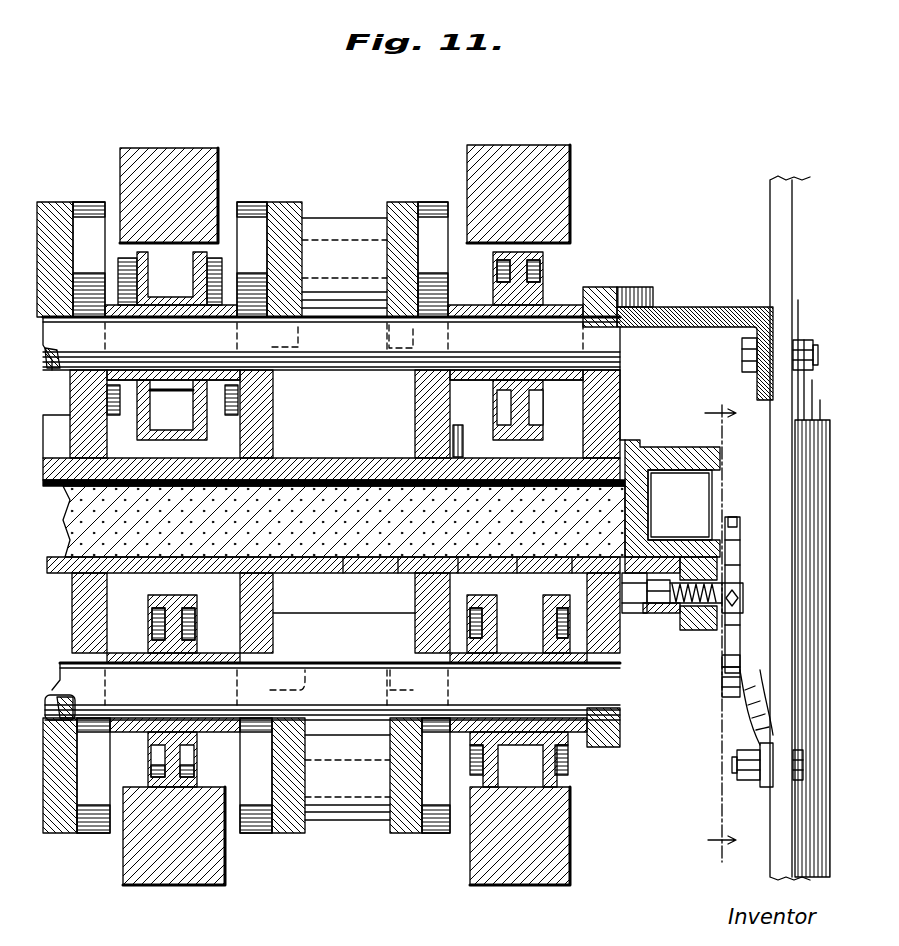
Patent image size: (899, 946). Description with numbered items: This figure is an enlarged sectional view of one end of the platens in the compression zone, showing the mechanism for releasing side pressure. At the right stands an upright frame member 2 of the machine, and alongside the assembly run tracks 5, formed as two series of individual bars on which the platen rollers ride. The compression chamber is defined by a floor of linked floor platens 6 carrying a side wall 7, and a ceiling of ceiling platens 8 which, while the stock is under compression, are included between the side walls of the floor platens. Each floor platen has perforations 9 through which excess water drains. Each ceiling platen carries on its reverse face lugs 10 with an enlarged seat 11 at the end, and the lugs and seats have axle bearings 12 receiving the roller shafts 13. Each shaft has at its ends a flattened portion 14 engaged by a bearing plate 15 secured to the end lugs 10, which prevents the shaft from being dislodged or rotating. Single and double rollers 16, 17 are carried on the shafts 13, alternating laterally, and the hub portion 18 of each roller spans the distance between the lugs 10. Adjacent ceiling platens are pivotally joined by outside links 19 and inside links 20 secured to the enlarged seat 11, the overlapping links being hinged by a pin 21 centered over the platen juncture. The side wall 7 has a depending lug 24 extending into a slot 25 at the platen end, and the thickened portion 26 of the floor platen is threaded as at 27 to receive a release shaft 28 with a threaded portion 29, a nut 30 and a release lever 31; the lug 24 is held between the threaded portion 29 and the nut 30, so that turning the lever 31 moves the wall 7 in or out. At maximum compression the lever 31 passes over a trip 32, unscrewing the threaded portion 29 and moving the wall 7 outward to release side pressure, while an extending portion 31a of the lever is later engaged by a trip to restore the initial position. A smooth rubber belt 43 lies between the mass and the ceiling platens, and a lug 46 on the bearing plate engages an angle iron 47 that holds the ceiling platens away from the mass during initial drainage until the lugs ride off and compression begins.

The upright frame member 2 is at (770, 204).
The track 5 is at (125, 157).
The floor platen 6 is at (612, 570).
The side wall 7 is at (707, 485).
The ceiling platen 8 is at (626, 424).
The perforation 9 is at (387, 573).
The lug 10 is at (70, 395).
The enlarged seat 11 is at (58, 697).
The axle bearing 12 is at (275, 393).
The roller axle shaft 13 is at (548, 328).
The flattened portion 14 is at (601, 322).
The bearing plate 15 is at (600, 290).
The single roller 16 is at (493, 272).
The double roller 17 is at (193, 272).
The hub portion 18 is at (515, 307).
The outside link 19 is at (247, 202).
The inside link 20 is at (285, 202).
The pin 21 is at (337, 240).
The depending lug 24 is at (652, 578).
The slot 25 is at (672, 540).
The thickened portion 26 is at (744, 648).
The threads 27 is at (738, 562).
The release shaft 28 is at (666, 613).
The threaded portion 29 is at (690, 631).
The nut 30 is at (640, 613).
The release lever 31 is at (725, 660).
The extending portion 31a is at (737, 528).
The trip 32 is at (727, 697).
The rubber belt 43 is at (66, 520).
The lug 46 is at (653, 305).
The angle iron 47 is at (705, 307).